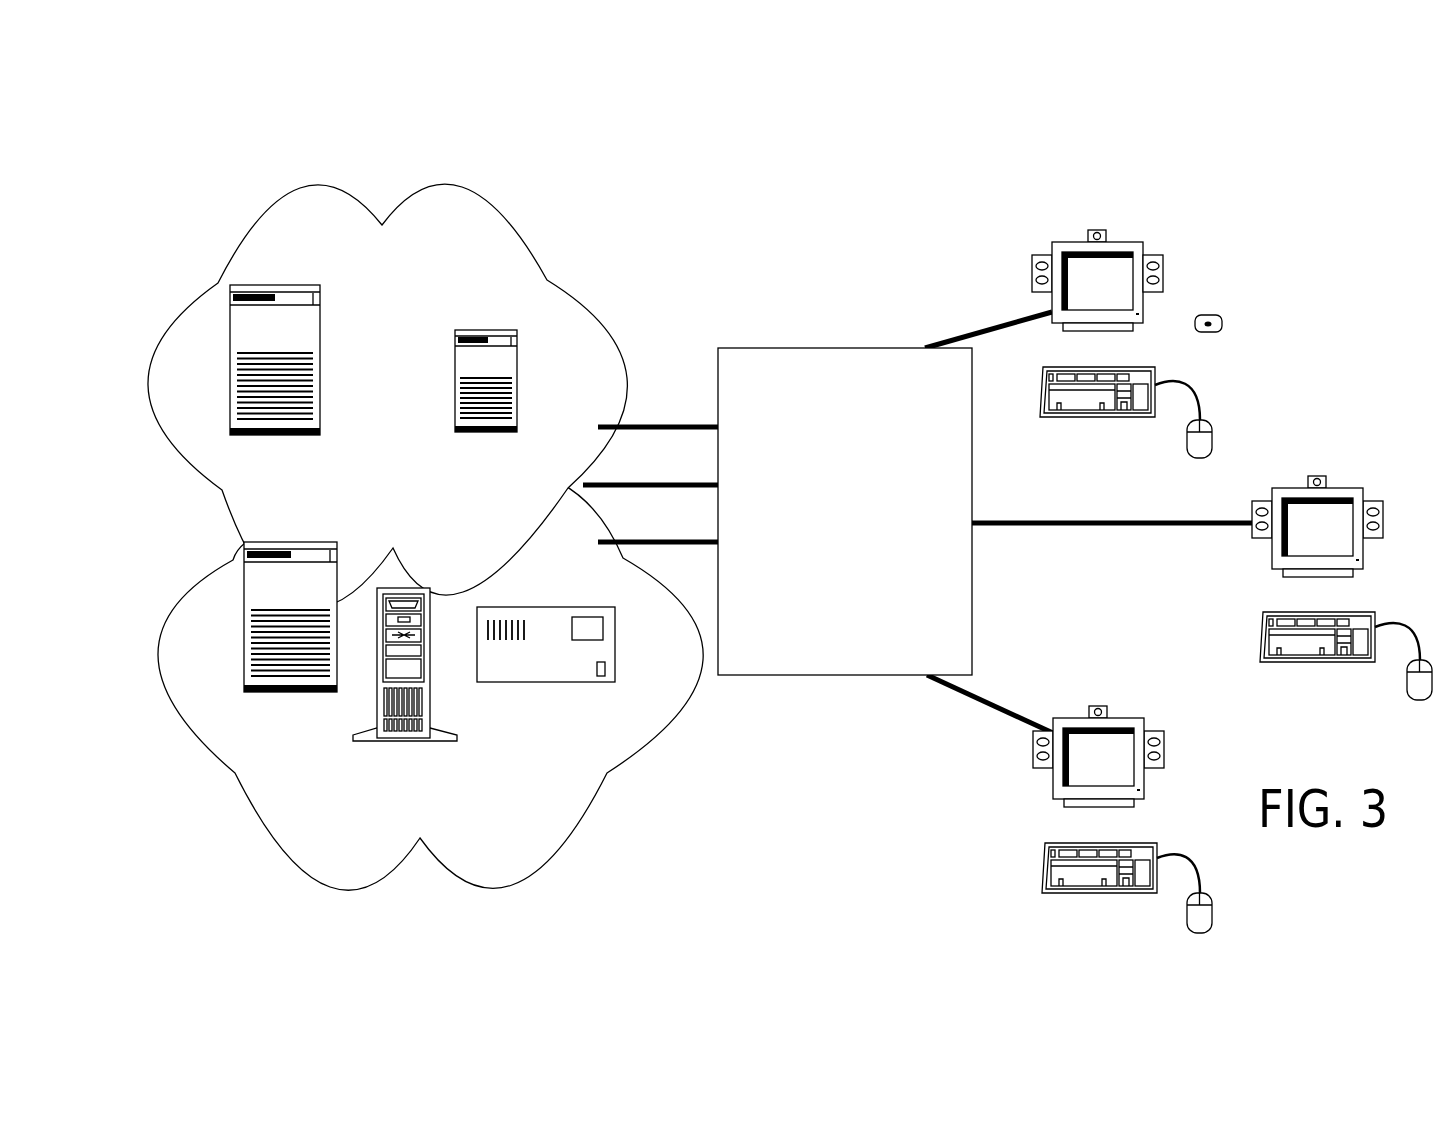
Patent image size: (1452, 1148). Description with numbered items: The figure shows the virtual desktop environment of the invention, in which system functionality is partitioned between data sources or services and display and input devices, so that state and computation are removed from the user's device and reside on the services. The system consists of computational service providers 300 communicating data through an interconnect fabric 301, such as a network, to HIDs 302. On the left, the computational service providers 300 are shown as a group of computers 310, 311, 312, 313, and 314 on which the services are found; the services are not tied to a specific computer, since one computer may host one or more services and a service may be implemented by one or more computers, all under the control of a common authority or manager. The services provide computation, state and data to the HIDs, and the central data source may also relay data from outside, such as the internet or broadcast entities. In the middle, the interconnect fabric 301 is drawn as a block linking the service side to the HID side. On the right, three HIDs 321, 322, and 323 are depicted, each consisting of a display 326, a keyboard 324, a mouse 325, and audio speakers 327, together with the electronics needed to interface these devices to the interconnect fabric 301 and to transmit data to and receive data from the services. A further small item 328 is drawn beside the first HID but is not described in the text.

The computational service providers 300 is at (758, 135).
The interconnect fabric 301 is at (837, 677).
The HIDs 302 is at (1392, 132).
The computer 310 is at (276, 290).
The computer 311 is at (490, 330).
The computer 312 is at (632, 648).
The computer 313 is at (403, 740).
The computer 314 is at (290, 542).
The HID 321 is at (1140, 242).
The HID 322 is at (1352, 487).
The HID 323 is at (1137, 722).
The keyboard 324 is at (1100, 418).
The mouse 325 is at (1213, 427).
The display 326 is at (1067, 250).
The audio speakers 327 is at (1163, 255).
The smart card / microphone 328 is at (1213, 317).